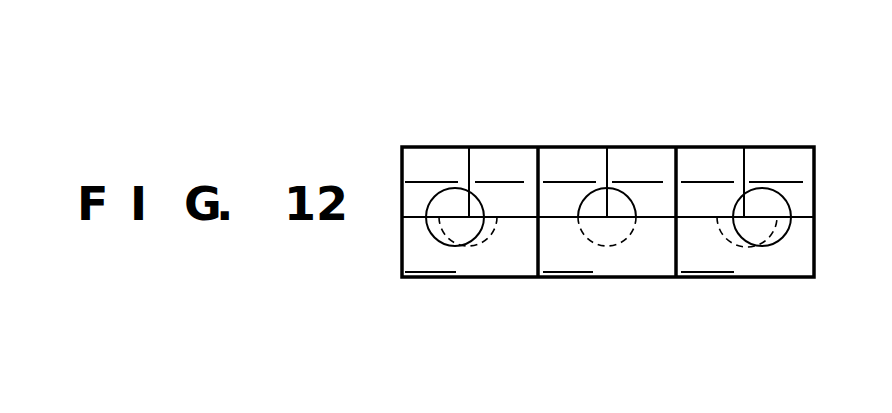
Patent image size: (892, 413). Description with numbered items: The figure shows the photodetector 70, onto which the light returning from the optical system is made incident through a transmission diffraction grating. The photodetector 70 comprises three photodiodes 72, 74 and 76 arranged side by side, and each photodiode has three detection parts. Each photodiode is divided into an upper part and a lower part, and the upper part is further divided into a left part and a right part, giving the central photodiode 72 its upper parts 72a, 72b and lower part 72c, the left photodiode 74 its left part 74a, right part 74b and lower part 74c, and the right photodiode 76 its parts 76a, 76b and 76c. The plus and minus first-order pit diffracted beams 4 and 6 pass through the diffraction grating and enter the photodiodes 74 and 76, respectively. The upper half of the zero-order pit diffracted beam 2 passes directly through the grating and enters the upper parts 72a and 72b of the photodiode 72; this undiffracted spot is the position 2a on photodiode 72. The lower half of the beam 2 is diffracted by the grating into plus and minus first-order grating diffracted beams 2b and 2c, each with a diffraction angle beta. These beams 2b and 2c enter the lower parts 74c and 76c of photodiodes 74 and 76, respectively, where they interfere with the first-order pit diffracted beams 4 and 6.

The photodetector 70 is at (688, 113).
The 0-order pit diffracted beam 2 is at (602, 188).
The first position of cylindrical member 2a is at (602, 247).
The +1st-order grating diffracted beam 2b is at (470, 247).
The -1st-order grating diffracted beam 2c is at (750, 247).
The +1st-order pit diffracted beam 4 is at (428, 199).
The -1st-order pit diffracted beam 6 is at (790, 203).
The photodiode 72 is at (628, 229).
The upper part of photodiode 72a is at (569, 167).
The upper part of photodiode 72b is at (637, 167).
The center area lower cell 72c is at (568, 257).
The photodiode 74 is at (402, 237).
The left part 74a is at (431, 167).
The right part 74b is at (499, 167).
The lower part 74c is at (430, 257).
The photodiode 76 is at (815, 247).
The right area upper-left cell 76a is at (707, 167).
The right area upper-right cell 76b is at (776, 167).
The lower part 76c is at (707, 257).